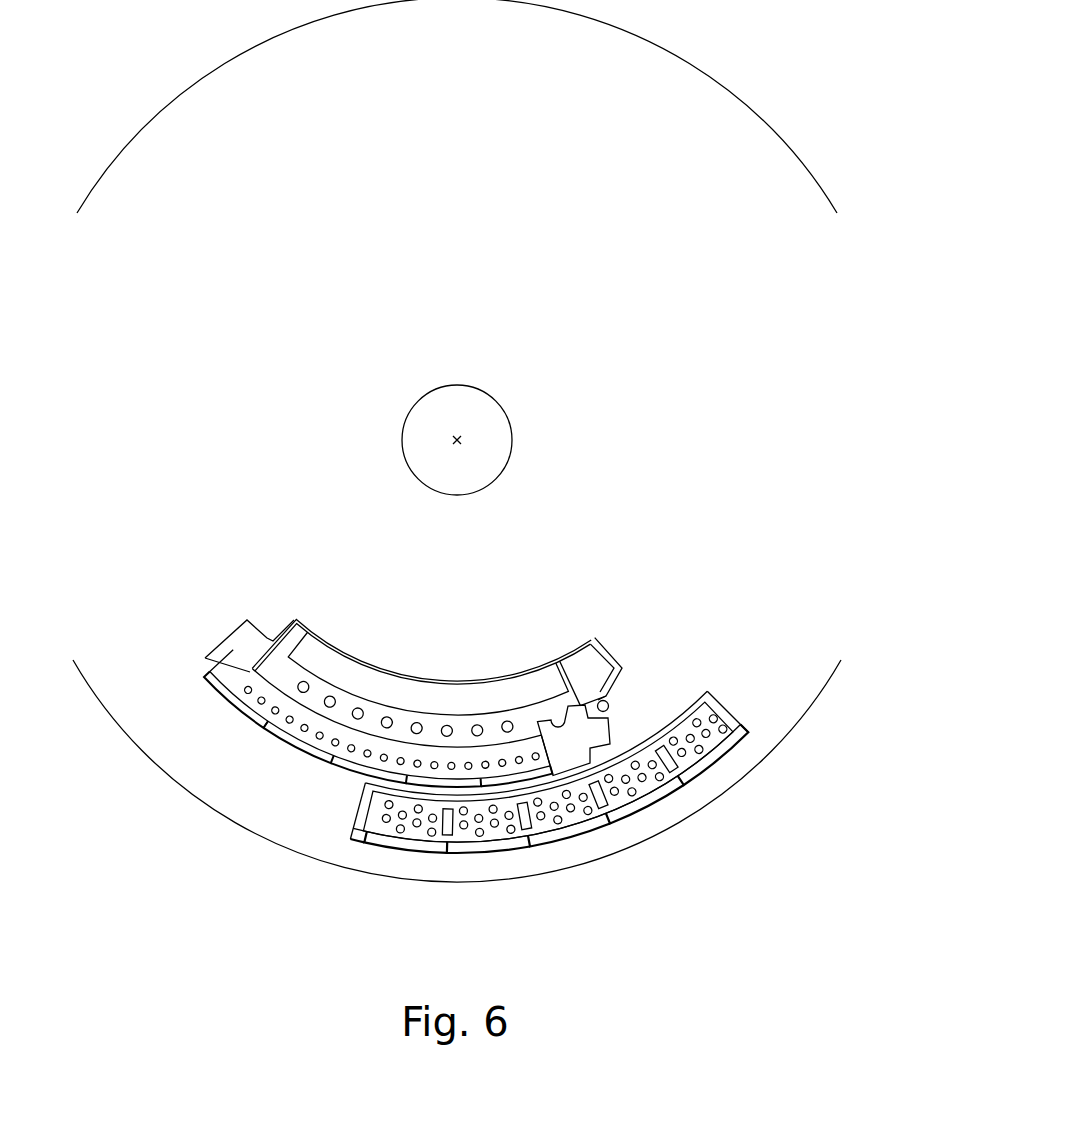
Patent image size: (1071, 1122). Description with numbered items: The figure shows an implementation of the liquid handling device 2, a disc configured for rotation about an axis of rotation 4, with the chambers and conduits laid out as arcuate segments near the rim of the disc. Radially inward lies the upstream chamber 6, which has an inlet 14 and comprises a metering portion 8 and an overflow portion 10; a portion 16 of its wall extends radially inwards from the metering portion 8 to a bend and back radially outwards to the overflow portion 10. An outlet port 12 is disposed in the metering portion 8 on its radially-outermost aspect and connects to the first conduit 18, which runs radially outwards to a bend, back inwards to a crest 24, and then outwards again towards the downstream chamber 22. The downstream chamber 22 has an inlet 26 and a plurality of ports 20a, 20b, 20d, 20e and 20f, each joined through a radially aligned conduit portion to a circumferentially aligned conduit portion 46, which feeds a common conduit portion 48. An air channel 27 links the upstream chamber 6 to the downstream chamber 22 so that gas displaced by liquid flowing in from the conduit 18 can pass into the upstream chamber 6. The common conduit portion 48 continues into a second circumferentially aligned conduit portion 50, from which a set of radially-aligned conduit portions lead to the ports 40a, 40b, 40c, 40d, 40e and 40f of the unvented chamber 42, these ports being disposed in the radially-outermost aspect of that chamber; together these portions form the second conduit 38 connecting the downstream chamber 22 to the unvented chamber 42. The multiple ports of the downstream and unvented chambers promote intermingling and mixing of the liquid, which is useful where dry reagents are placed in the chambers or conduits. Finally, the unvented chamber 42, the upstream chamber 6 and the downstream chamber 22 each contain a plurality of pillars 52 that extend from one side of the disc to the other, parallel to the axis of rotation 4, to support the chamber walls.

The liquid handling device 2 is at (767, 952).
The axis of rotation 4 is at (472, 434).
The upstream chamber 6 is at (428, 665).
The metering portion 8 is at (608, 697).
The overflow portion 10 is at (396, 693).
The outlet port 12 is at (611, 712).
The inlet 14 is at (626, 665).
The wall portion 16 is at (571, 657).
The first conduit 18 is at (588, 748).
The outlet 20a is at (196, 692).
The outlet 20b is at (246, 744).
The outlet 20d is at (356, 786).
The outlet 20e is at (370, 719).
The outlet 20f is at (518, 708).
The downstream chamber 22 is at (355, 714).
The crest 24 is at (592, 718).
The inlet 26 is at (235, 620).
The air channel 27 is at (421, 623).
The second conduit 38 is at (495, 766).
The port 40a is at (364, 879).
The port 40b is at (405, 876).
The port 40c is at (515, 880).
The port 40d is at (589, 857).
The port 40e is at (695, 803).
The port 40f is at (765, 755).
The unvented chamber 42 is at (735, 690).
The circumferentially aligned conduit portion 46 is at (249, 761).
The common conduit portion 48 is at (326, 841).
The second circumferentially aligned conduit portion 50 is at (546, 795).
The pillars 52 is at (458, 777).